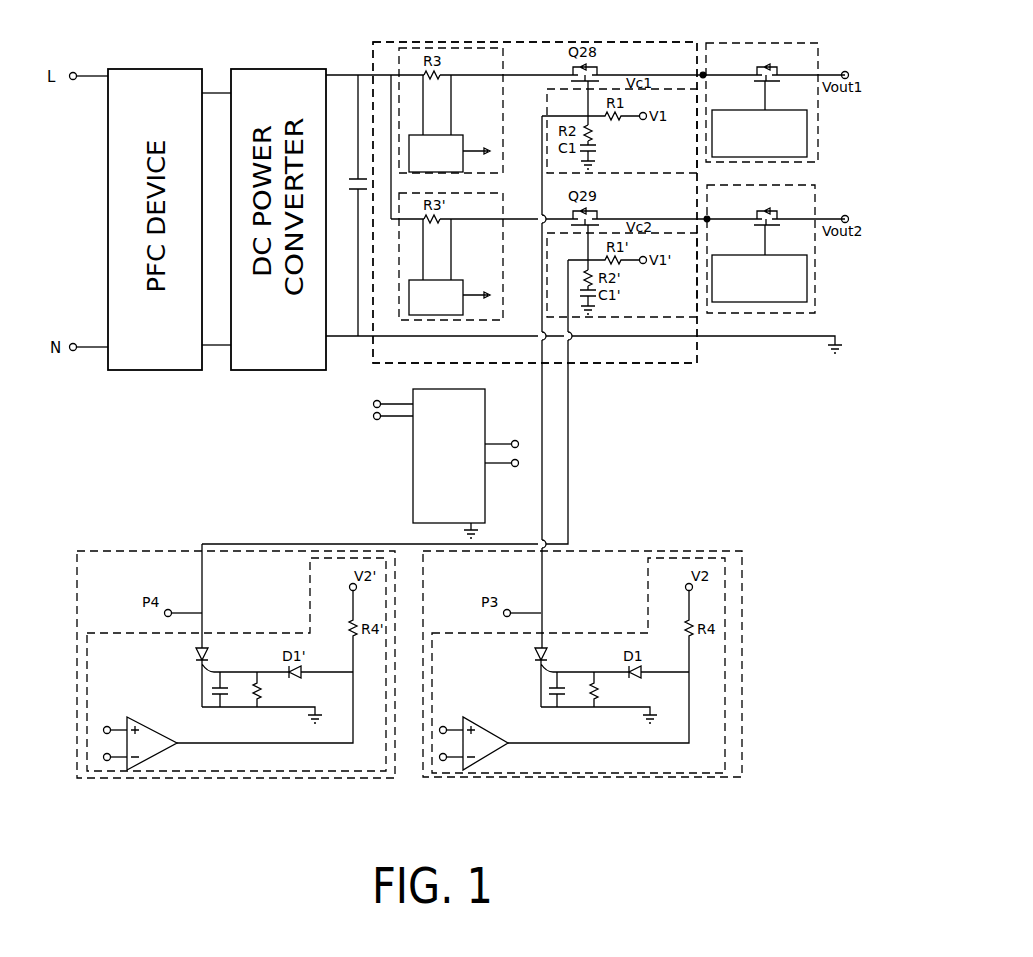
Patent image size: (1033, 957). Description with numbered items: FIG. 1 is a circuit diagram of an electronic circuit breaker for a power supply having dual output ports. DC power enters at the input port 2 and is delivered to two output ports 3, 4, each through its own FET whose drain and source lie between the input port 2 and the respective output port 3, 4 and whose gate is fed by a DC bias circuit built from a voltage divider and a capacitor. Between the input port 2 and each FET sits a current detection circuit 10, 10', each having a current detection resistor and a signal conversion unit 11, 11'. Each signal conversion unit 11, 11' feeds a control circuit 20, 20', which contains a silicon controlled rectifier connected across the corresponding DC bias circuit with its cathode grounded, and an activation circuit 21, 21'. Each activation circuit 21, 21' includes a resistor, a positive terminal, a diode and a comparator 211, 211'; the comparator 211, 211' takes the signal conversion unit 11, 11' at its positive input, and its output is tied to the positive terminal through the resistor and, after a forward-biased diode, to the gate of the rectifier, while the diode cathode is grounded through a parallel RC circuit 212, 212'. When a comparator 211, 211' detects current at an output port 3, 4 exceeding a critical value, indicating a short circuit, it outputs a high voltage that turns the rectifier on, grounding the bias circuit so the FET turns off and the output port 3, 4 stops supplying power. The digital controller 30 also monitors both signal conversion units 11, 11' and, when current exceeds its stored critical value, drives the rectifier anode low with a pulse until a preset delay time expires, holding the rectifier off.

The input port 2 is at (365, 75).
The output port 3 is at (703, 75).
The output port 4 is at (706, 313).
The current detection circuit 10 is at (535, 181).
The current detection circuit 10' is at (535, 204).
The signal conversion unit 11 is at (451, 110).
The signal conversion unit 11' is at (451, 256).
The control circuit 20 is at (582, 643).
The control circuit 20' is at (236, 644).
The activation circuit 21 is at (615, 665).
The activation circuit 21' is at (236, 640).
The digital controller 30 is at (485, 418).
The comparator 211 is at (475, 716).
The comparator 211' is at (140, 716).
The RC circuit 212 is at (596, 658).
The RC circuit 212' is at (259, 658).